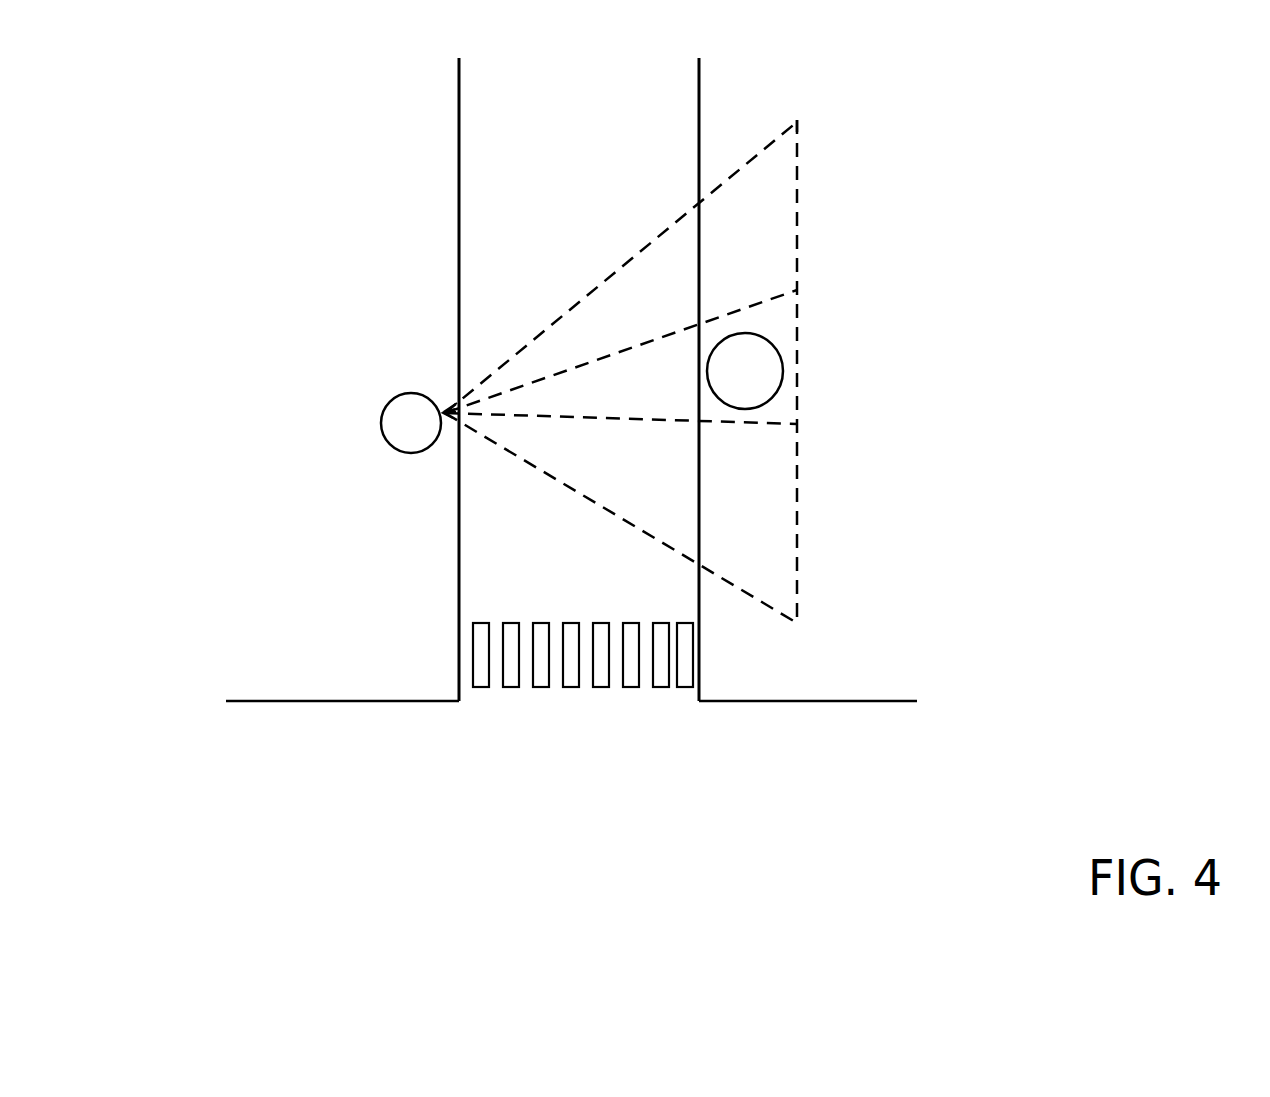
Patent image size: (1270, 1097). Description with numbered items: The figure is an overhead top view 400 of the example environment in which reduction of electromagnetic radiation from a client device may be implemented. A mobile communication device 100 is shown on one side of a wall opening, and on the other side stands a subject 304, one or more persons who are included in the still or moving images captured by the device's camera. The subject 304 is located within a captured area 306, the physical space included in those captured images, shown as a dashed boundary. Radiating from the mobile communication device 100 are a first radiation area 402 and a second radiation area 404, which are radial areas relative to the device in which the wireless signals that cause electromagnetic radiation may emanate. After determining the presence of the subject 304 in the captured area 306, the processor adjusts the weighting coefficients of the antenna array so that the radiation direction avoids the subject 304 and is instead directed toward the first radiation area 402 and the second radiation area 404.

The top view 400 is at (137, 41).
The mobile communication device 100 is at (398, 394).
The subject 304 is at (778, 352).
The captured area 306 is at (797, 200).
The first radiation area 402 is at (640, 270).
The second radiation area 404 is at (640, 508).